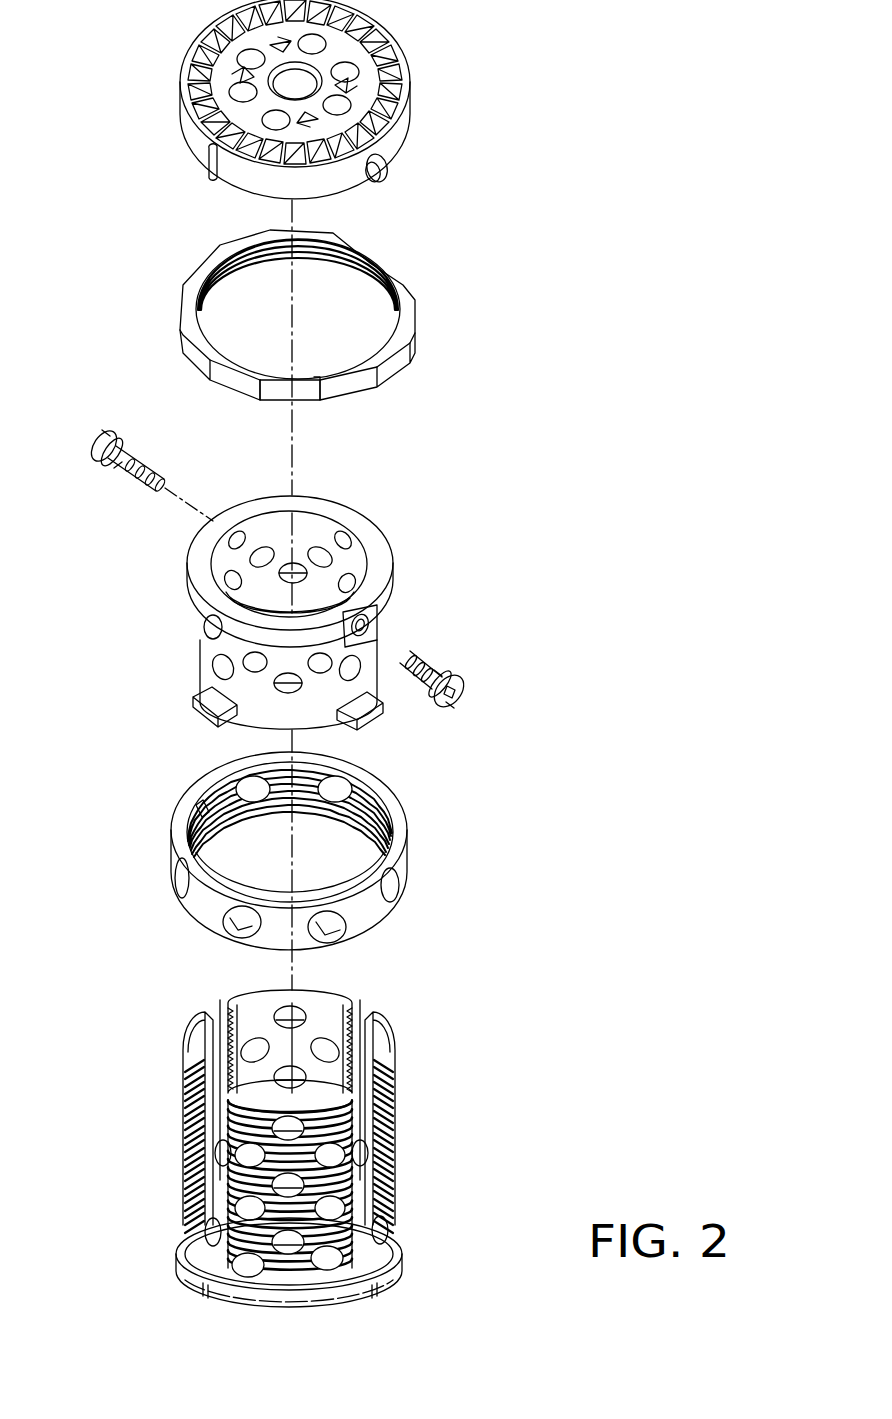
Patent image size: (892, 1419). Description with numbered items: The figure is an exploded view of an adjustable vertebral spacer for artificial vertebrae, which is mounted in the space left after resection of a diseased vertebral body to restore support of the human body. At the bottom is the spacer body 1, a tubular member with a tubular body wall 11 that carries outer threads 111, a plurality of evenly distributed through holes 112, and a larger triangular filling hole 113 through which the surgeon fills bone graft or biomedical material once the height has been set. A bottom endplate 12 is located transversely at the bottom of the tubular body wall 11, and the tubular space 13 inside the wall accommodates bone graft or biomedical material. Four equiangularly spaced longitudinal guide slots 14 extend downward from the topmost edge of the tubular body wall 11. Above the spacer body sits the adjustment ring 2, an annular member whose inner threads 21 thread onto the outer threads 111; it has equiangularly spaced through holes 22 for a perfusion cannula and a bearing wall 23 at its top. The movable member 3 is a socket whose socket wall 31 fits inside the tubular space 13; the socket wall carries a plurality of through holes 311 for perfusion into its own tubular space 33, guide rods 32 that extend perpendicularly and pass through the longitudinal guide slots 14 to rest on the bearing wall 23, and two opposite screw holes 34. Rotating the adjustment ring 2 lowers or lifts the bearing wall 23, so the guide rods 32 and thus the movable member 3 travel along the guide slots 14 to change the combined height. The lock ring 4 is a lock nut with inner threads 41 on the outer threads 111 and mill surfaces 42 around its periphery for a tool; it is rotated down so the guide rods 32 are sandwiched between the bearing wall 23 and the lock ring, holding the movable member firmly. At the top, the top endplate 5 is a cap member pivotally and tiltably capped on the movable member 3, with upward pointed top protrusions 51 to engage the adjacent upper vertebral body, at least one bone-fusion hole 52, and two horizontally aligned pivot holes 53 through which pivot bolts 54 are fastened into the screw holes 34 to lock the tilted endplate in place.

The spacer body 1 is at (395, 1093).
The tubular body wall 11 is at (350, 1020).
The outer threads 111 is at (393, 1153).
The through holes 112 is at (197, 1227).
The filling hole 113 is at (365, 1240).
The bottom endplate 12 is at (205, 1263).
The tubular space 13 is at (258, 1075).
The longitudinal guide slots 14 is at (357, 1052).
The adjustment ring 2 is at (372, 915).
The inner threads 21 is at (365, 780).
The through holes 22 is at (395, 885).
The bearing wall 23 is at (190, 808).
The movable member 3 is at (372, 655).
The socket wall 31 is at (210, 668).
The through holes 311 is at (198, 662).
The guide rods 32 is at (362, 712).
The tubular space 33 is at (305, 527).
The screw holes 34 is at (360, 605).
The lock ring 4 is at (400, 278).
The inner threads 41 is at (357, 262).
The mill surfaces 42 is at (357, 384).
The top endplate 5 is at (410, 103).
The top protrusions 51 is at (390, 43).
The bone-fusion hole 52 is at (282, 88).
The pivot holes 53 is at (378, 176).
The pivot bolts 54 is at (433, 662).